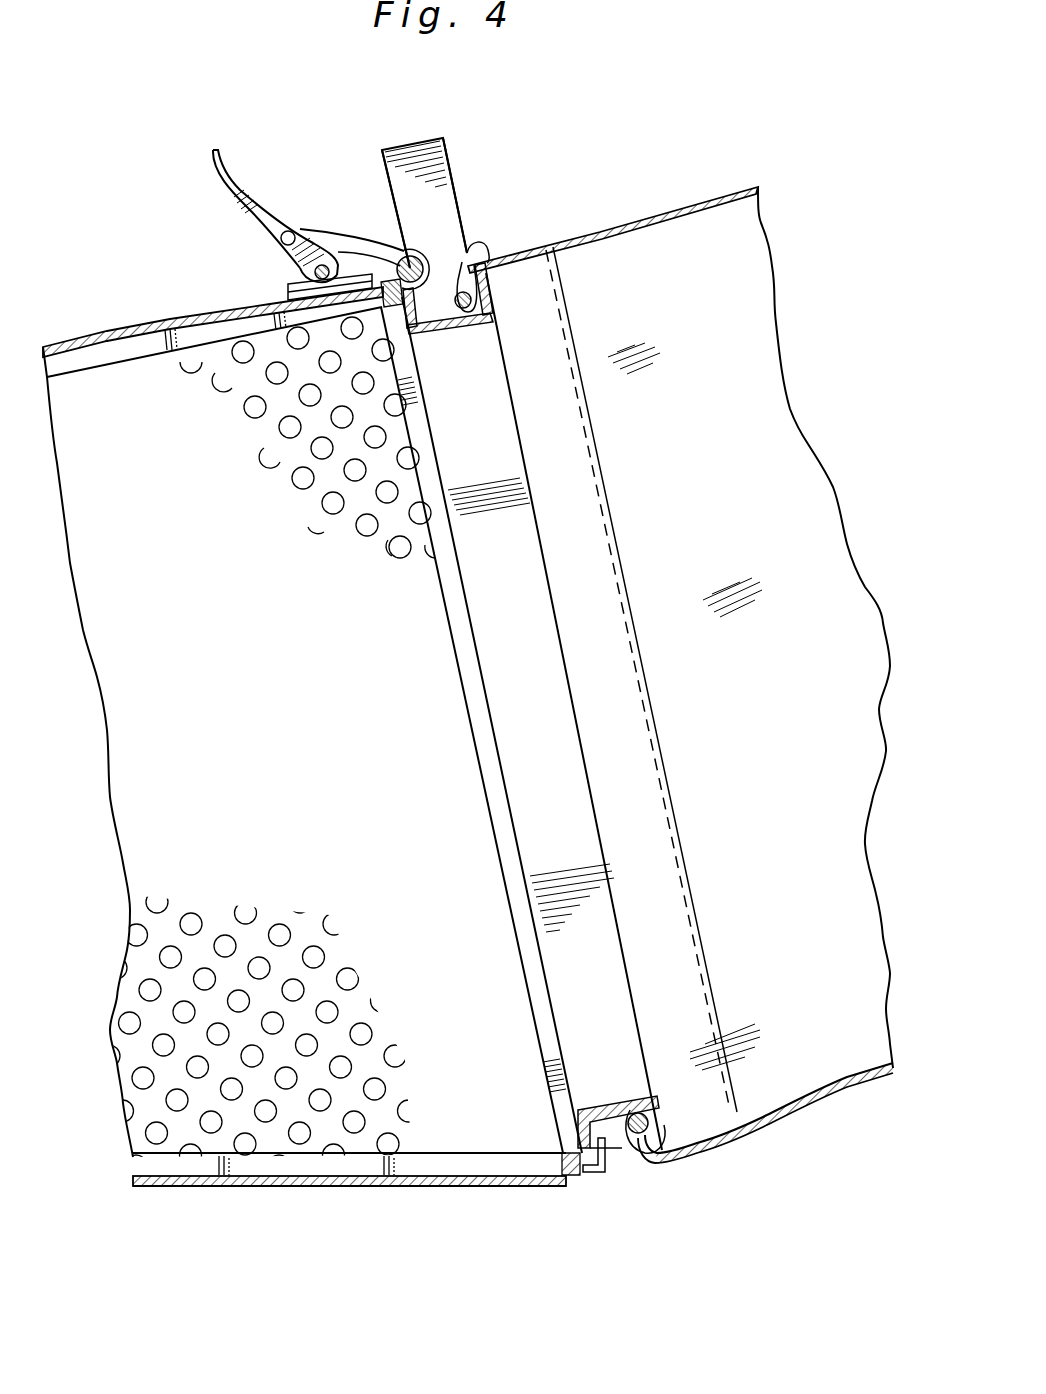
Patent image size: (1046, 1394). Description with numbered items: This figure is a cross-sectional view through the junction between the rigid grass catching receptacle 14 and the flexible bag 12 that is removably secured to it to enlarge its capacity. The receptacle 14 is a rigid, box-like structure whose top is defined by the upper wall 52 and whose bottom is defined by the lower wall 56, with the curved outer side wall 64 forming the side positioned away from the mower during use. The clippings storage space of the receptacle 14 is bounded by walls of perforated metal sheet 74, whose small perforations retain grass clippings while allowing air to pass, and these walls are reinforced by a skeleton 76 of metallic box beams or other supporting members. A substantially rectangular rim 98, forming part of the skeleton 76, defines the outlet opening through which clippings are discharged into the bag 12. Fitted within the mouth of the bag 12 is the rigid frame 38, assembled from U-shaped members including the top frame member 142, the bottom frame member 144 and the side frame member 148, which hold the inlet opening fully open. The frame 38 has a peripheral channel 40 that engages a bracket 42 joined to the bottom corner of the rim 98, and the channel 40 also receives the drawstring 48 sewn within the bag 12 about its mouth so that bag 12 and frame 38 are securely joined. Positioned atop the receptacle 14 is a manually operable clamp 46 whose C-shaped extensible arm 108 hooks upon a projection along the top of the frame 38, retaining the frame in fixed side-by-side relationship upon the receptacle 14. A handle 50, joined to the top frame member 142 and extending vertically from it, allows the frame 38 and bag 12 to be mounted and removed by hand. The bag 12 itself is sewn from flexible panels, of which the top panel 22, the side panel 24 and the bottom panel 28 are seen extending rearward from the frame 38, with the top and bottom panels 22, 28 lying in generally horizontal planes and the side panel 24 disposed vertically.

The flexible bag 12 is at (785, 1113).
The grass catching receptacle 14 is at (420, 1198).
The top panel 22 is at (585, 232).
The side panel 24 is at (680, 601).
The bottom panel 28 is at (858, 1075).
The rigid frame 38 is at (458, 150).
The peripheral channel 40 is at (628, 1154).
The bracket 42 is at (605, 1175).
The clamp 46 is at (270, 256).
The drawstring 48 is at (486, 303).
The handle 50 is at (437, 218).
The upper wall 52 is at (107, 332).
The lower wall 56 is at (272, 1183).
The outer side wall 64 is at (178, 633).
The perforated metal sheet 74 is at (255, 482).
The reinforcing skeleton 76 is at (121, 352).
The rim 98 is at (460, 665).
The C-shaped extensible arm 108 is at (340, 229).
The top frame member 142 is at (463, 327).
The bottom frame member 144 is at (612, 1107).
The side frame member 148 is at (555, 722).